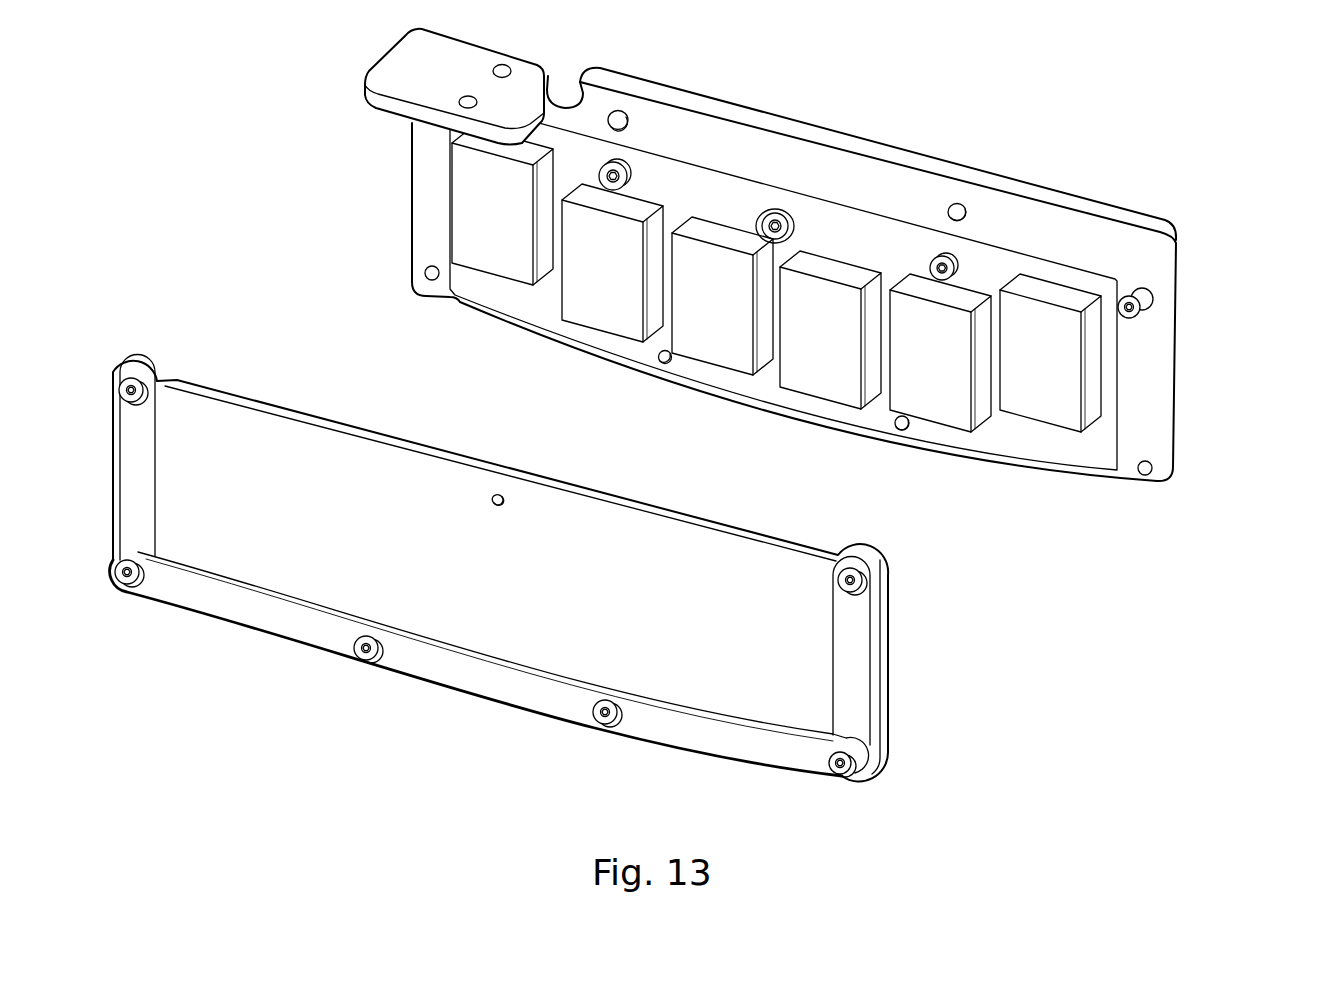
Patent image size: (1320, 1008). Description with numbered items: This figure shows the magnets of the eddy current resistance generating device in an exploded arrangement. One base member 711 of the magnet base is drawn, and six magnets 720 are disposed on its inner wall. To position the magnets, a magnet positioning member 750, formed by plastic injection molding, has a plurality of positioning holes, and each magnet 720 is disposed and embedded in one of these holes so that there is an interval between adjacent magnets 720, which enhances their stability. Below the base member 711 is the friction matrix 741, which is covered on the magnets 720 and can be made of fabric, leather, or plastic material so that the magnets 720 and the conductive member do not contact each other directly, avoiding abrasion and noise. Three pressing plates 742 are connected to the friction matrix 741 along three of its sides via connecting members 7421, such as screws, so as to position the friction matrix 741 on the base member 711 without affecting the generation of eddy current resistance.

The base member 711 is at (1028, 178).
The magnet 720 is at (1058, 367).
The friction matrix 741 is at (717, 548).
The pressing plate 742 is at (862, 633).
The connecting member 7421 is at (855, 777).
The magnet positioning member 750 is at (1055, 448).